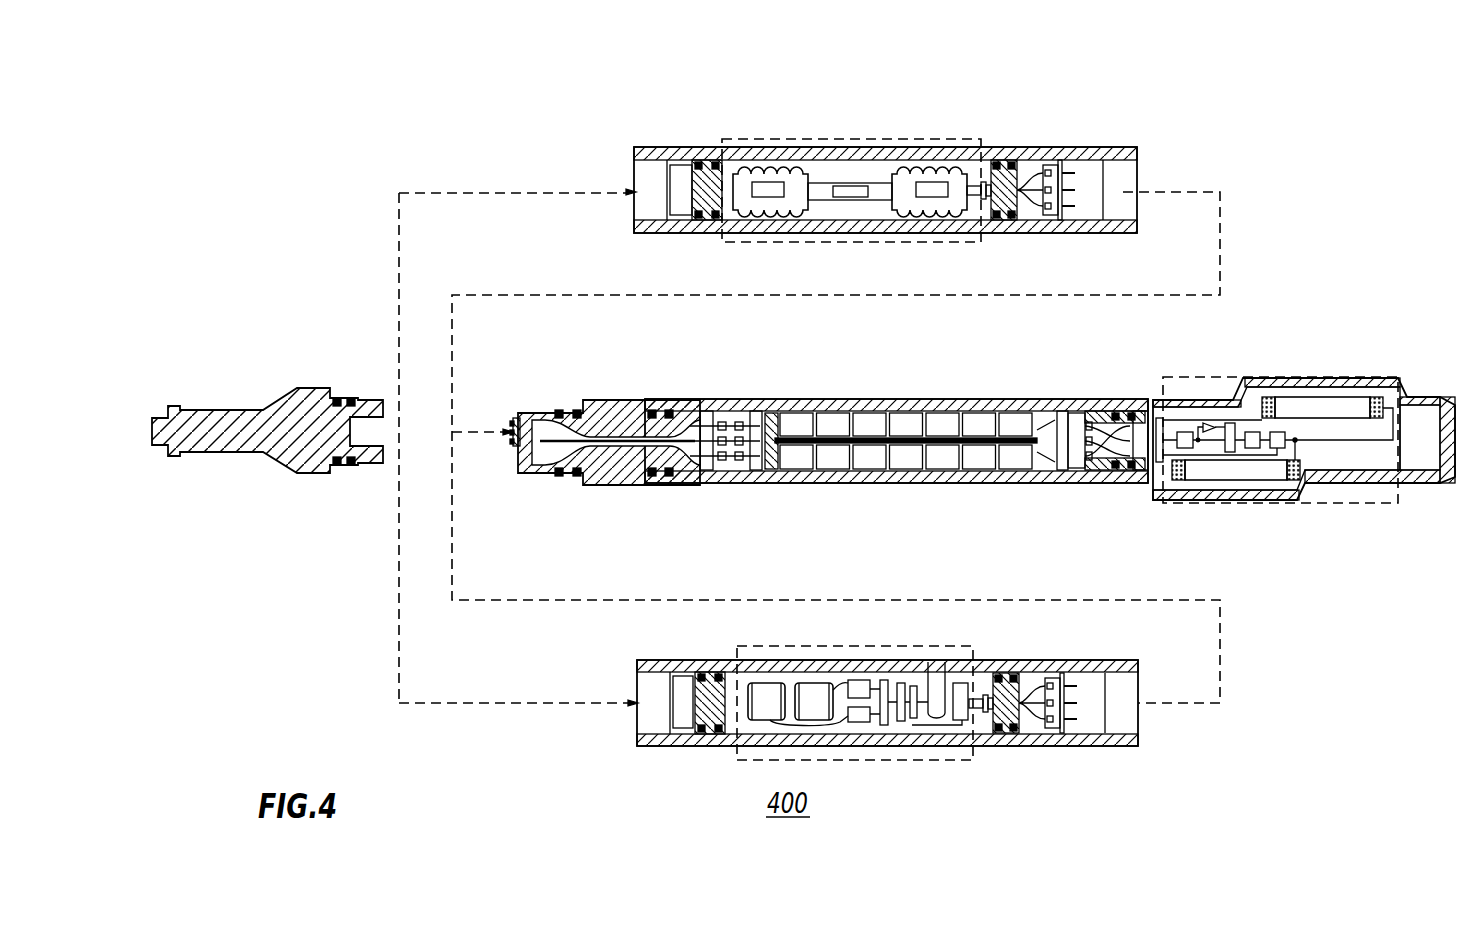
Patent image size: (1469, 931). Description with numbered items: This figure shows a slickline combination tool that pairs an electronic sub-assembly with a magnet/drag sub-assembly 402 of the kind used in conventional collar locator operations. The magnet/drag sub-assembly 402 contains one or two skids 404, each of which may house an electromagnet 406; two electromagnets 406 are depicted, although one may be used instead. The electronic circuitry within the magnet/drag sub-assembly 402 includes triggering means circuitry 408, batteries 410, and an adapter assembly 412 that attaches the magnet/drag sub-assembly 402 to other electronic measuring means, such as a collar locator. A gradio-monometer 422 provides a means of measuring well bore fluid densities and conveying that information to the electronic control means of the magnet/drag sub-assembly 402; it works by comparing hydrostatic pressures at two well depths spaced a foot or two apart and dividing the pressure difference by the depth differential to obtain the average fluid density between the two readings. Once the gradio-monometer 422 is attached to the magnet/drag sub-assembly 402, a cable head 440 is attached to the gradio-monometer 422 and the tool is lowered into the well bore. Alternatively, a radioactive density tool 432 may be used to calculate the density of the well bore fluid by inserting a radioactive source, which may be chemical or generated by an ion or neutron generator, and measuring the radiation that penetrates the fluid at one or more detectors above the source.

The magnet/drag sub-assembly 402 is at (900, 483).
The skid 404 is at (1352, 375).
The electromagnet 406 is at (1335, 410).
The triggering means circuitry 408 is at (1165, 424).
The batteries 410 is at (935, 399).
The adapter assembly 412 is at (618, 406).
The gradio-monometer 422 is at (790, 139).
The radioactive density tool 432 is at (1072, 746).
The cable head 440 is at (297, 388).